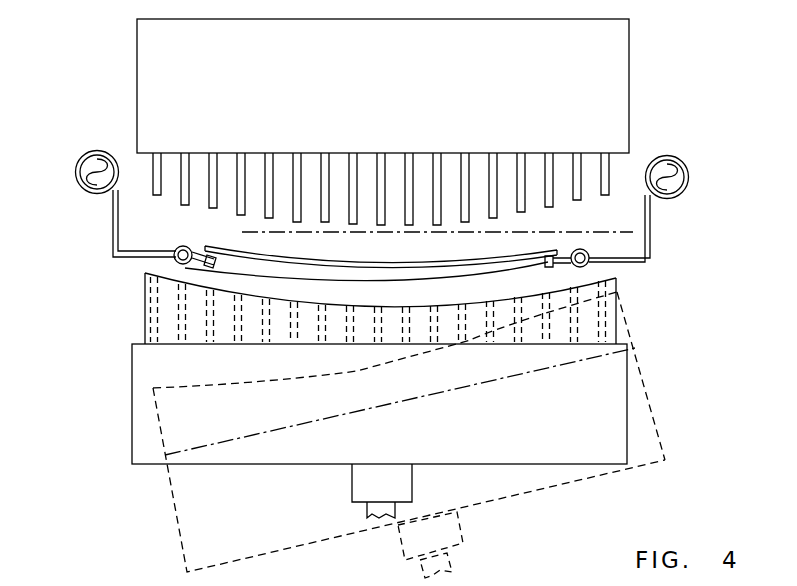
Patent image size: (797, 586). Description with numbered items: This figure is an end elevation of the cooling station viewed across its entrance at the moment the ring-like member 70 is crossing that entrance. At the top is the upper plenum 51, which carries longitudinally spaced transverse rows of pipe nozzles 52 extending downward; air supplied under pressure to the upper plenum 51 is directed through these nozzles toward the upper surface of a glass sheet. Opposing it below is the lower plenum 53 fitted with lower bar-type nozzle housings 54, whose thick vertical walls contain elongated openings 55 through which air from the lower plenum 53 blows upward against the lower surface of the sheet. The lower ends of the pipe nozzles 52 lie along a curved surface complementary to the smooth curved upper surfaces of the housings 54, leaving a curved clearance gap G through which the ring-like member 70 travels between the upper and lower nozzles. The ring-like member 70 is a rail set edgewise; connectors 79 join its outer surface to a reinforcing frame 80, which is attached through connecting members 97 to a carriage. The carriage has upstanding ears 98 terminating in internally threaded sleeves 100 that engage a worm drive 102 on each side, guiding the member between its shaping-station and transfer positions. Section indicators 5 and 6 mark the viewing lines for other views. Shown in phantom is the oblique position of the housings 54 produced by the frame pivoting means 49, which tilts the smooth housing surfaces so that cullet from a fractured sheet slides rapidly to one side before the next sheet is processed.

The frame pivoting means 49 is at (412, 488).
The upper plenum 51 is at (394, 98).
The pipe nozzles 52 is at (306, 132).
The lower plenum 53 is at (167, 492).
The lower bar-type nozzle housings 54 is at (365, 307).
The elongated openings 55 is at (340, 322).
The ring-like member 70 is at (230, 270).
The connectors 79 is at (200, 254).
The reinforcing frame 80 is at (187, 239).
The connecting members 97 is at (113, 258).
The upstanding ears 98 is at (112, 214).
The internally threaded sleeves 100 is at (100, 150).
The worm drive 102 is at (700, 107).
The section line 5- 5 is at (637, 269).
The section line 6- 6 is at (132, 232).
The gap G is at (370, 260).